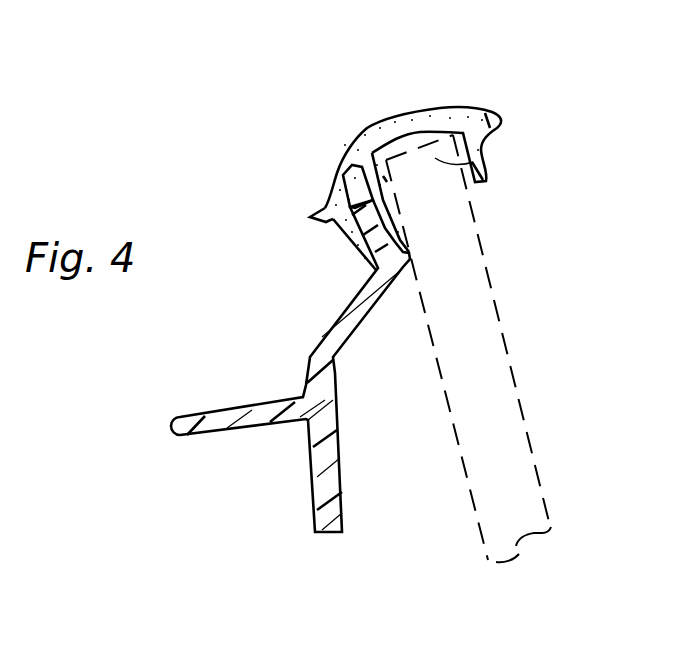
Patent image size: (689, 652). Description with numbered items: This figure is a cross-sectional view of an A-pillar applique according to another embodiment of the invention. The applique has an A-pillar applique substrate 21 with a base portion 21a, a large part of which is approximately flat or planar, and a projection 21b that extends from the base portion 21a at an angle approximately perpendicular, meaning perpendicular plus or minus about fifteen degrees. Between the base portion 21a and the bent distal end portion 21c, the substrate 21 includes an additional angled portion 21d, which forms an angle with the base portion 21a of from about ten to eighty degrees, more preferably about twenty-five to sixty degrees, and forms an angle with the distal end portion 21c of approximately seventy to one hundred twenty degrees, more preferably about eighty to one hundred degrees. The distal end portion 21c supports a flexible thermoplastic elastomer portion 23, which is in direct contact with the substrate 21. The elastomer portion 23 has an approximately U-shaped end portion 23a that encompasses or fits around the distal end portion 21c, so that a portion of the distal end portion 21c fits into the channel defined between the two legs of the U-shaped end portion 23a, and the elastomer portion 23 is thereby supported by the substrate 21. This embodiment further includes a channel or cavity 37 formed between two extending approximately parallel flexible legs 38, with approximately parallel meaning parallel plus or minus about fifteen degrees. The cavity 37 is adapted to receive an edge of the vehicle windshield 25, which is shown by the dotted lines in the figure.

The A-pillar applique substrate 21 is at (327, 447).
The base portion 21a is at (318, 483).
The projection 21b is at (218, 416).
The distal end portion 21c is at (392, 219).
The angled portion 21d is at (366, 305).
The thermoplastic elastomer portion 23 is at (408, 122).
The U-shaped end portion 23a is at (333, 190).
The vehicle windshield 25 is at (515, 380).
The channel or cavity 37 is at (473, 162).
The flexible legs 38 is at (386, 178).